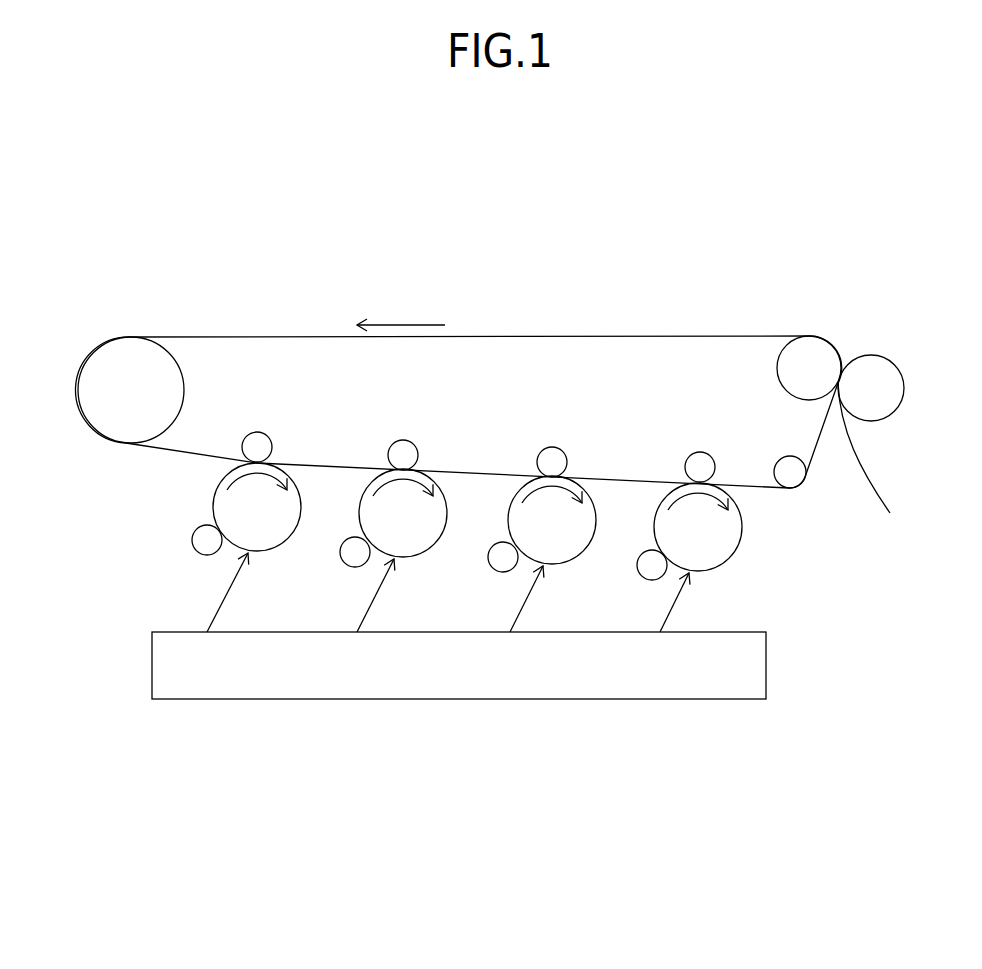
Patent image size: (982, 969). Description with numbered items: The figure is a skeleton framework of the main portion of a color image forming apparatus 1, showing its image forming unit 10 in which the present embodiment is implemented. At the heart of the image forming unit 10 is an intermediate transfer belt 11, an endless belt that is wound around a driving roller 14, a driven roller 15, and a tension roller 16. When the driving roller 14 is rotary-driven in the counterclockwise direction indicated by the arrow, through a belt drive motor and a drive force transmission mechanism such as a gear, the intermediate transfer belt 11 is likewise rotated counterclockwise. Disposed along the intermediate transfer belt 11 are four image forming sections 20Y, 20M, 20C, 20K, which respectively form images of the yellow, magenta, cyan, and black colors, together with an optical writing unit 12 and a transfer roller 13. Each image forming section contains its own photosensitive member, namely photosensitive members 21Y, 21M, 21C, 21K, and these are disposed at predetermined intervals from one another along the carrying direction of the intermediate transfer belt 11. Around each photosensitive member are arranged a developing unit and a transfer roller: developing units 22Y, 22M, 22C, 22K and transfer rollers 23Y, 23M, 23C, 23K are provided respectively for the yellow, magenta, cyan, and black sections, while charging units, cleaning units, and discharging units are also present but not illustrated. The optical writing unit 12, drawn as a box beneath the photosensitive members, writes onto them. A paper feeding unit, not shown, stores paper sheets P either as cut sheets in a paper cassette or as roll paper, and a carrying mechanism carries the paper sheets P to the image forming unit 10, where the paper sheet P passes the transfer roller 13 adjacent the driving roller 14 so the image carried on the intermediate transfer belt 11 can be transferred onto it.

The image forming apparatus 1 is at (674, 247).
The image forming unit 10 is at (714, 312).
The intermediate transfer belt 11 is at (560, 334).
The optical writing unit 12 is at (766, 664).
The transfer roller 13 is at (905, 390).
The driving roller 14 is at (825, 348).
The driven roller 15 is at (80, 390).
The tension roller 16 is at (790, 457).
The paper sheet P is at (872, 487).
The image forming section 20Y is at (181, 514).
The photosensitive member 21Y is at (288, 470).
The developing unit 22Y is at (196, 551).
The transfer roller 23Y is at (257, 432).
The image forming section 20M is at (332, 524).
The photosensitive member 21M is at (440, 475).
The developing unit 22M is at (345, 566).
The transfer roller 23M is at (403, 440).
The image forming section 20C is at (484, 535).
The photosensitive member 21C is at (583, 480).
The developing unit 22C is at (493, 570).
The transfer roller 23C is at (552, 447).
The image forming section 20K is at (624, 534).
The photosensitive member 21K is at (742, 528).
The developing unit 22K is at (641, 577).
The transfer roller 23K is at (700, 452).